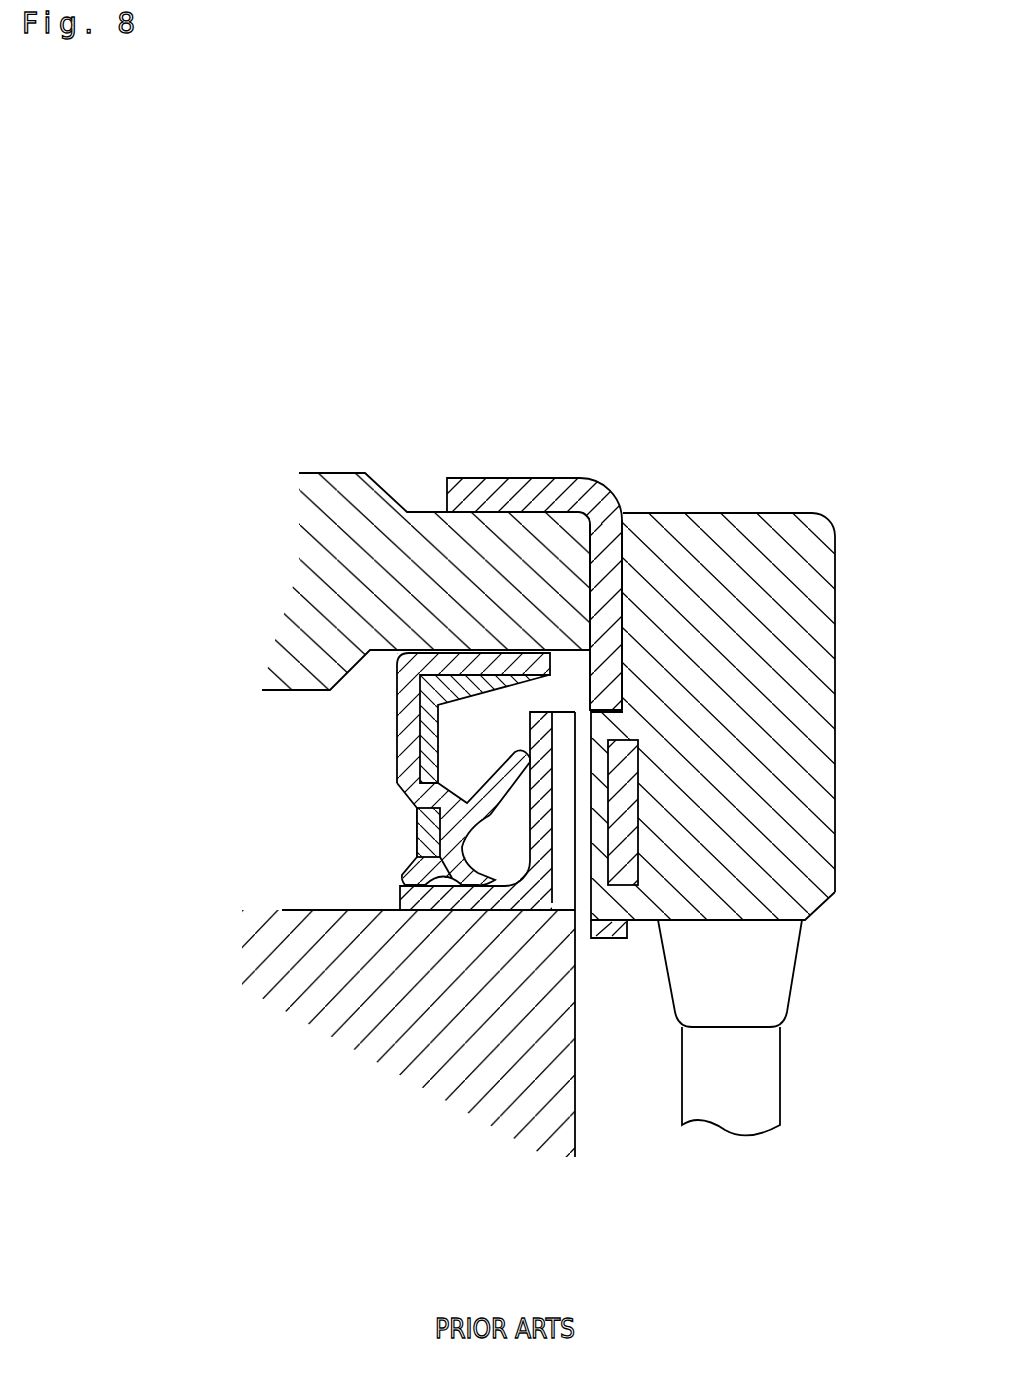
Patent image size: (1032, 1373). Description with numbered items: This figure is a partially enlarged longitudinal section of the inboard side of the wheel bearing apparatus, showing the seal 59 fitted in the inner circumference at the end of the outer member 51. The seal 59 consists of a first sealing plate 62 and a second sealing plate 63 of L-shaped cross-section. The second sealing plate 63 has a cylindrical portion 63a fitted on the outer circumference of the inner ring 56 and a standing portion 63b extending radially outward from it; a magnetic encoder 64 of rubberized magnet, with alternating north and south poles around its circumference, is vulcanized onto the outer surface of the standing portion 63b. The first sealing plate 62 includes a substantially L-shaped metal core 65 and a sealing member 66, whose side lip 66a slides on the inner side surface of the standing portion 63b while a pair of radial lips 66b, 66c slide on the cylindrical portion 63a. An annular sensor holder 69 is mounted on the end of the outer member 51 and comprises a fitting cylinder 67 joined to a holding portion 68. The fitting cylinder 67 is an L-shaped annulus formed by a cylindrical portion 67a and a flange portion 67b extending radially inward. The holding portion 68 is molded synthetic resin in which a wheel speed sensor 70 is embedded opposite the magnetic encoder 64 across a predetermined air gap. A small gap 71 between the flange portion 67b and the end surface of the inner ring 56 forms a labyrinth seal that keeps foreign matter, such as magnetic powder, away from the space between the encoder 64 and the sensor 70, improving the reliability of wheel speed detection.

The outer member 51 is at (448, 558).
The inner ring 56 is at (517, 1083).
The seal 59 is at (339, 795).
The first sealing plate 62 is at (448, 803).
The second sealing plate 63 is at (349, 1015).
The cylindrical portion 63a is at (405, 893).
The standing portion 63b is at (490, 880).
The magnetic encoder 64 is at (550, 912).
The metal core 65 is at (392, 732).
The sealing member 66 is at (320, 876).
The side lip 66a is at (435, 826).
The radial lip 66b is at (403, 873).
The radial lip 66c is at (397, 890).
The fitting cylinder 67 is at (583, 544).
The cylindrical portion 67a is at (473, 495).
The flange portion 67b is at (620, 567).
The holding portion 68 is at (754, 824).
The annular sensor holder 69 is at (790, 587).
The wheel speed sensor 70 is at (640, 782).
The small gap 71 is at (563, 840).